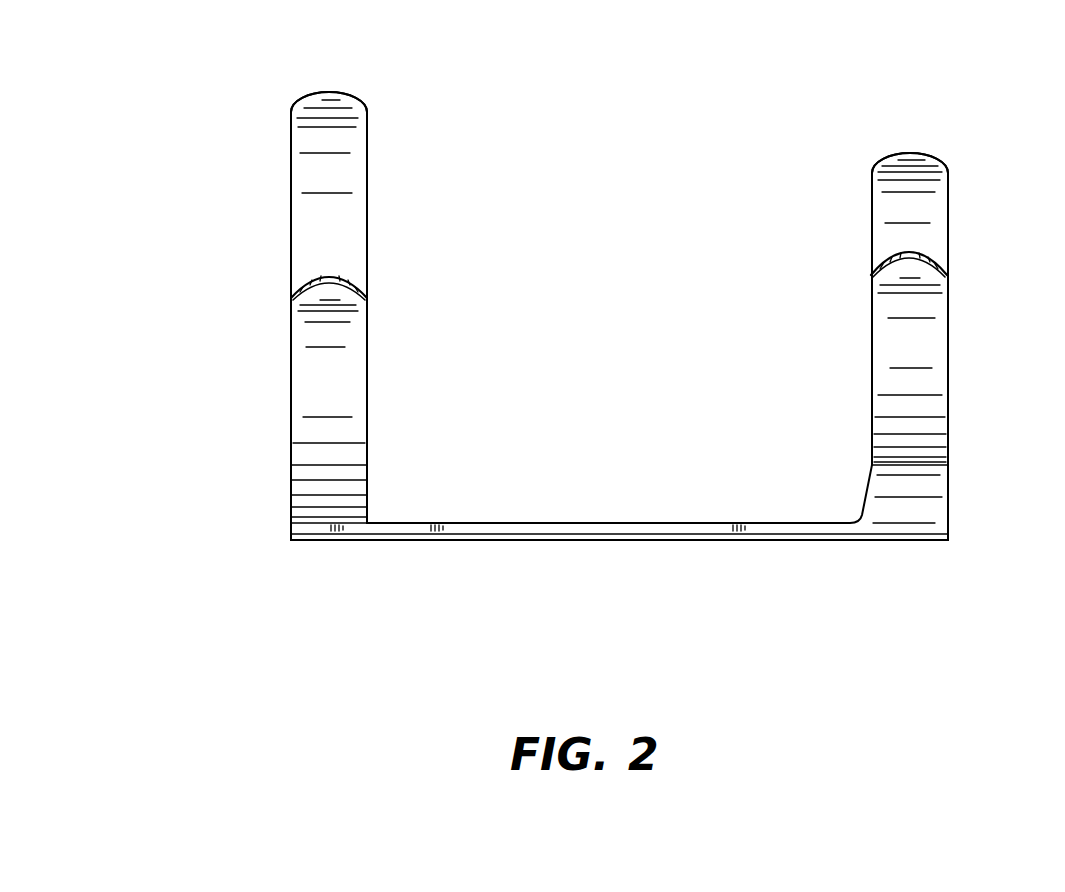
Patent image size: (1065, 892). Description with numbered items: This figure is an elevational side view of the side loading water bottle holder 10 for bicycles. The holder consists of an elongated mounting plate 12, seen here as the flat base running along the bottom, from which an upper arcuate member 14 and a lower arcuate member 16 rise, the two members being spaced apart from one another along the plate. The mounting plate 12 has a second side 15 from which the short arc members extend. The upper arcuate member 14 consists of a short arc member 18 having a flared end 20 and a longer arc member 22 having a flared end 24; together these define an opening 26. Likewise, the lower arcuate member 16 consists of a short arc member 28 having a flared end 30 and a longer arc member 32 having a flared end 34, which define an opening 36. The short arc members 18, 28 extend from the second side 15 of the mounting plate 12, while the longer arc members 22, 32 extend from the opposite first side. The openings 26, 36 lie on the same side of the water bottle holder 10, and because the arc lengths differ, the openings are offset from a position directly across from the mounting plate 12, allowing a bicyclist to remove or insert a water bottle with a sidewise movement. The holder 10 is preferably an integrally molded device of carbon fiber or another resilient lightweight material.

The water bottle holder 10 is at (263, 420).
The mounting plate 12 is at (573, 540).
The upper arcuate member 14 is at (960, 354).
The second side 15 is at (678, 532).
The lower arcuate member 16 is at (268, 310).
The short arc member 18 is at (878, 351).
The flared end 20 is at (886, 262).
The longer arc member 22 is at (885, 216).
The flared end 24 is at (908, 152).
The opening 26 is at (922, 232).
The short arc member 28 is at (355, 412).
The flared end 30 is at (355, 290).
The longer arc member 32 is at (348, 183).
The flared end 34 is at (328, 92).
The opening 36 is at (318, 213).